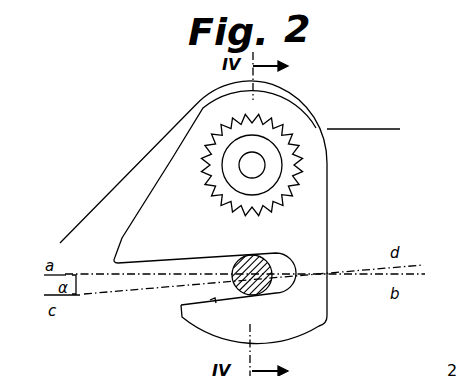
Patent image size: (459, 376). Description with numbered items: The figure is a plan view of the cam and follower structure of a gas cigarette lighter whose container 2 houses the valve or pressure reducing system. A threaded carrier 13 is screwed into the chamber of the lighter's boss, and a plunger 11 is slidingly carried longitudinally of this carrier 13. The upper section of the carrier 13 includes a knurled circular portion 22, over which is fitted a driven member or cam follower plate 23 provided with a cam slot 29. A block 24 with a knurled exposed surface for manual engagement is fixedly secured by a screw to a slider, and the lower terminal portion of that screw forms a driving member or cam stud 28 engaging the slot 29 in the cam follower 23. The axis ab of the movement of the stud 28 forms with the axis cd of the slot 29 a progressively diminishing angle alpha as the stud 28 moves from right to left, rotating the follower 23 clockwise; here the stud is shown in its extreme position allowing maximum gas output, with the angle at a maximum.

The container 2 is at (132, 183).
The plunger 11 is at (270, 150).
The threaded carrier 13 is at (296, 148).
The knurled circular portion 22 is at (203, 112).
The cam follower plate 23 is at (320, 224).
The block 24 is at (408, 368).
The cam stud 28 is at (178, 304).
The cam slot 29 is at (215, 298).